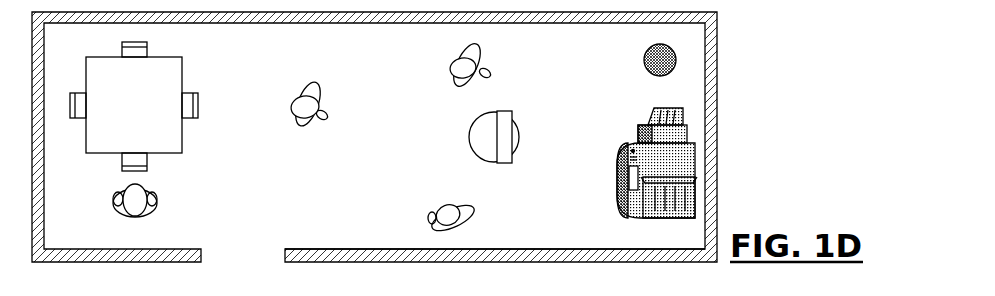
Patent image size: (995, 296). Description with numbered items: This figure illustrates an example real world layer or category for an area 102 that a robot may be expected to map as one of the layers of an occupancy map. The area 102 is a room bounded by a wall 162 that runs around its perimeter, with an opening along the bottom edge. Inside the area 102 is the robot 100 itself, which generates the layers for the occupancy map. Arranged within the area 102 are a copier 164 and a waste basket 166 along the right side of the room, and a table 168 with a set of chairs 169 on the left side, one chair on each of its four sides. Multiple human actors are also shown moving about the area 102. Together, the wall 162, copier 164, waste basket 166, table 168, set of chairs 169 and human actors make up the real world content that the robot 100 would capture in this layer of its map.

The area 102 is at (862, 28).
The wall 162 is at (377, 258).
The copier 164 is at (652, 117).
The waste basket 166 is at (647, 62).
The table 168 is at (165, 77).
The set of chairs 169 is at (187, 110).
The robot 100 is at (482, 141).